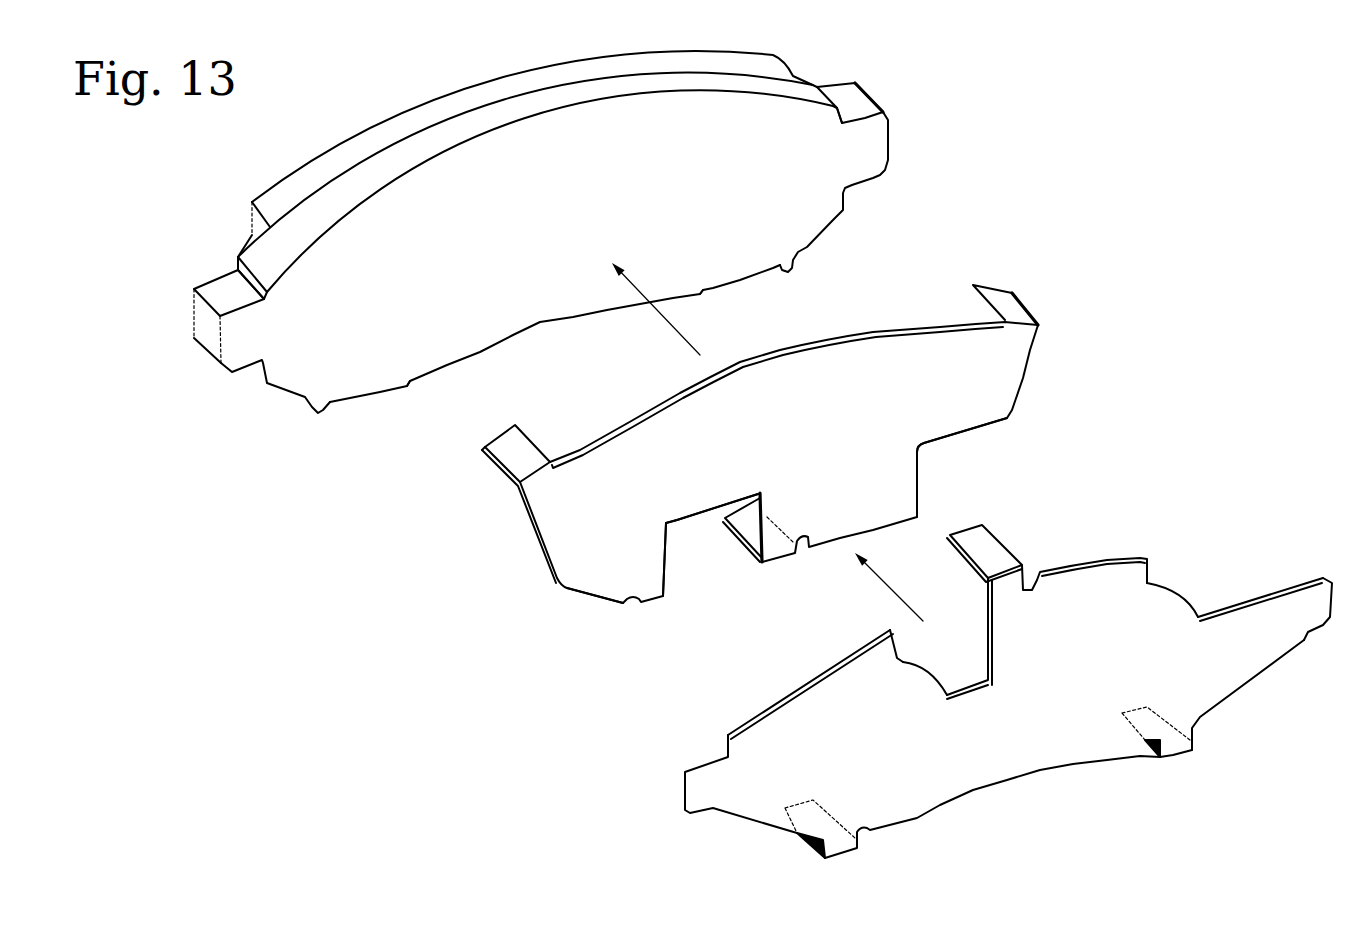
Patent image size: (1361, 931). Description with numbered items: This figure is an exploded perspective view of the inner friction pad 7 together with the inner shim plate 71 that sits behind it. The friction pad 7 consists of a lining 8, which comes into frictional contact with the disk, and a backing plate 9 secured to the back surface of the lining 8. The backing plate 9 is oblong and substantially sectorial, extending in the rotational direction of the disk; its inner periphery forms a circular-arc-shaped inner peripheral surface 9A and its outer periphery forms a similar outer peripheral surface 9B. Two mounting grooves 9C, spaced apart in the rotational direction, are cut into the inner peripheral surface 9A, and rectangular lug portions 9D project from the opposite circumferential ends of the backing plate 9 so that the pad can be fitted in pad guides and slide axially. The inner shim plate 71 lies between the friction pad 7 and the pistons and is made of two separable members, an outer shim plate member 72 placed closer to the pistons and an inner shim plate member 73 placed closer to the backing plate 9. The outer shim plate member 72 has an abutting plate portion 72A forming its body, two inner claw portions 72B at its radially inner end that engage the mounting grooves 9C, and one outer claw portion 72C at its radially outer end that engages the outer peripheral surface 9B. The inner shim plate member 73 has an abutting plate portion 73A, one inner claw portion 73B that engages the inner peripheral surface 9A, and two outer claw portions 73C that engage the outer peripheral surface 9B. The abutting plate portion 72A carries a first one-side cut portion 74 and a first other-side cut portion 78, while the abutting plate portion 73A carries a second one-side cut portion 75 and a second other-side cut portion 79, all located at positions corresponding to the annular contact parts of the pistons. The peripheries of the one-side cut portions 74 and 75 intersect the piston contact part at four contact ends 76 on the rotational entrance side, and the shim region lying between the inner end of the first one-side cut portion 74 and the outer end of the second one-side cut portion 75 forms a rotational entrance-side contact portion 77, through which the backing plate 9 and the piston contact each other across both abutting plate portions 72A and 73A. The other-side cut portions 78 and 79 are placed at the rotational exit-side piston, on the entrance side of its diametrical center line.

The friction pad 7 is at (822, 85).
The lining 8 is at (304, 177).
The backing plate 9 is at (452, 132).
The inner peripheral surface 9A is at (575, 320).
The outer peripheral surface 9B is at (393, 160).
The mounting grooves 9C is at (740, 278).
The lug portions 9D is at (877, 147).
The inner shim plate 71 is at (1052, 418).
The outer shim plate member 72 is at (1103, 575).
The abutting plate portion 72A is at (1053, 740).
The inner claw portions 72B is at (1173, 753).
The outer claw portion 72C is at (985, 533).
The inner shim plate member 73 is at (883, 345).
The abutting plate portion 73A is at (630, 430).
The inner claw portion 73B is at (743, 527).
The outer claw portions 73C is at (512, 442).
The first one-side cut portion 74 is at (1187, 583).
The second one-side cut portion 75 is at (922, 467).
The contact ends 76 is at (953, 438).
The rotational entrance-side contact portion 77 is at (1213, 628).
The first other-side cut portion 78 is at (927, 665).
The second other-side cut portion 79 is at (670, 523).